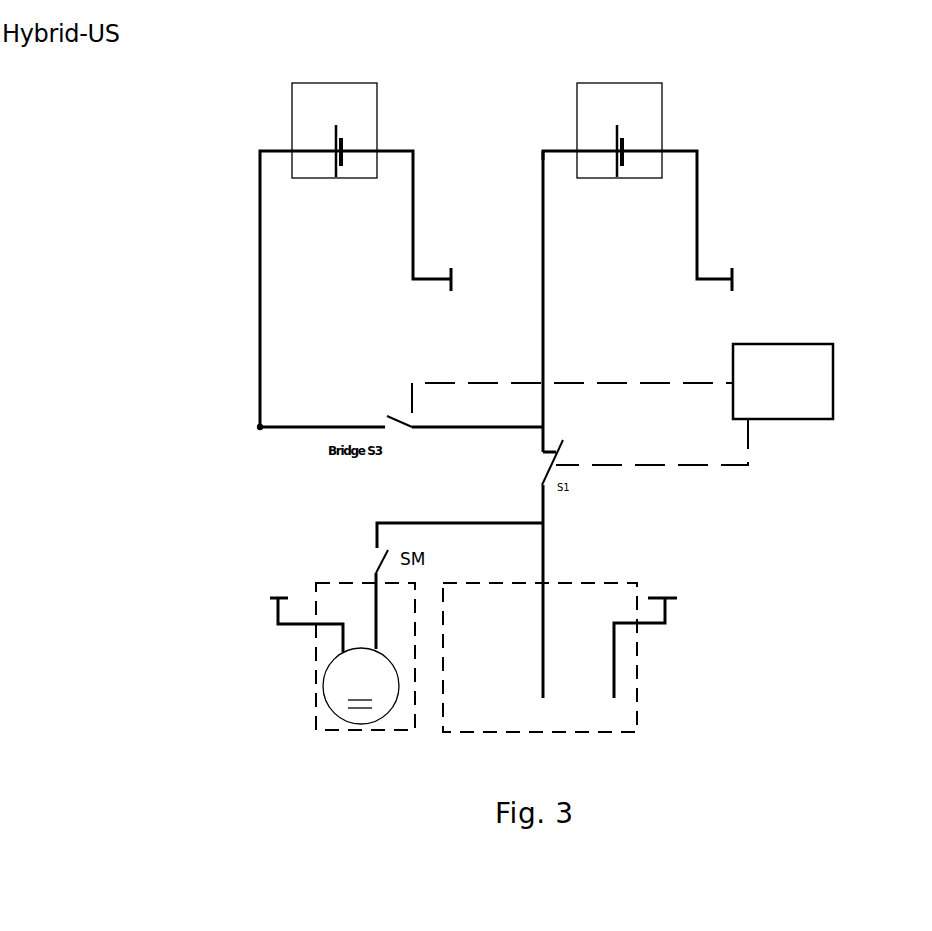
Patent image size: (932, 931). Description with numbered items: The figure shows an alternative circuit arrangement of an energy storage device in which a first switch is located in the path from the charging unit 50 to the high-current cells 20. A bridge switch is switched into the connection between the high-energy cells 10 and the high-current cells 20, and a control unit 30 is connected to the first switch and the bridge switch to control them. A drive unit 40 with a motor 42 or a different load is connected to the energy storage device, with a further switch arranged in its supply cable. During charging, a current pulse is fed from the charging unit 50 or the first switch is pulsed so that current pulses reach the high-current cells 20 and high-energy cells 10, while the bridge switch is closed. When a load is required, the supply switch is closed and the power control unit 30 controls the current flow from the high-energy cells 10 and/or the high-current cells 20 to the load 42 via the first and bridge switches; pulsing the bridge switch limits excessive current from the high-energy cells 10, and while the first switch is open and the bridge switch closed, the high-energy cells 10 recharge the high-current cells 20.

The high-energy cells 10 is at (292, 116).
The high-current cells 20 is at (662, 103).
The control unit 30 is at (833, 370).
The drive unit 40 is at (398, 730).
The motor 42 is at (327, 693).
The charging unit 50 is at (635, 665).